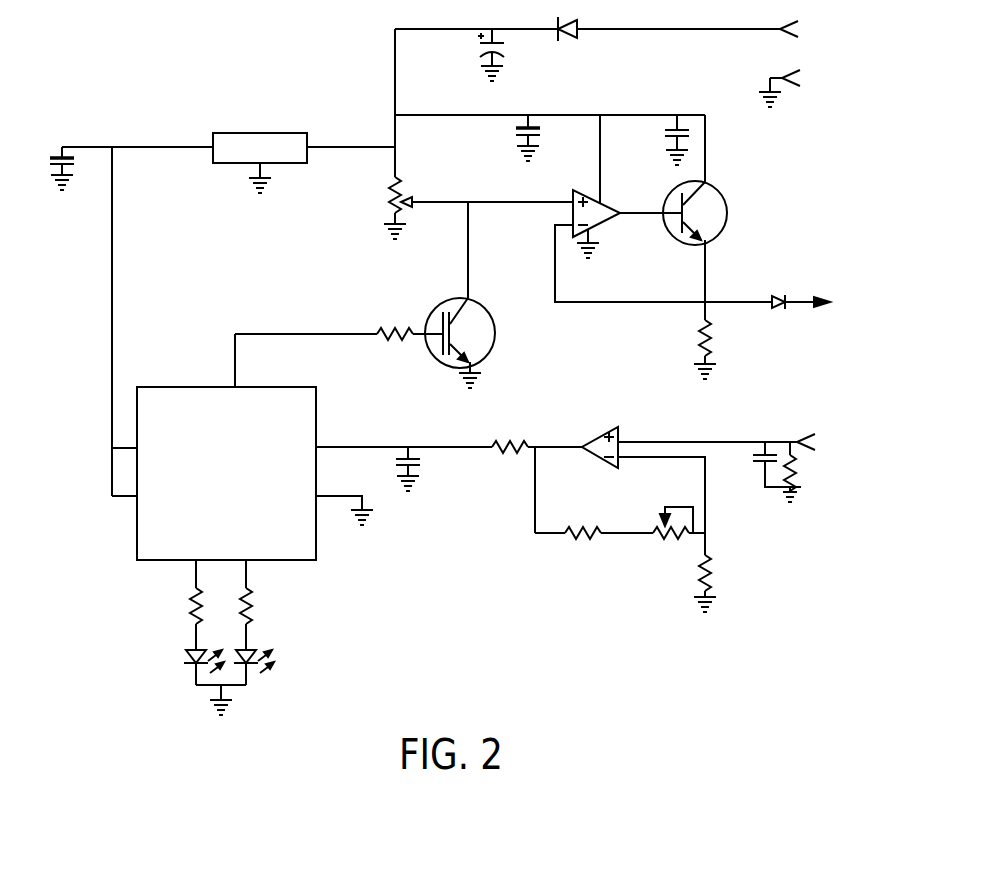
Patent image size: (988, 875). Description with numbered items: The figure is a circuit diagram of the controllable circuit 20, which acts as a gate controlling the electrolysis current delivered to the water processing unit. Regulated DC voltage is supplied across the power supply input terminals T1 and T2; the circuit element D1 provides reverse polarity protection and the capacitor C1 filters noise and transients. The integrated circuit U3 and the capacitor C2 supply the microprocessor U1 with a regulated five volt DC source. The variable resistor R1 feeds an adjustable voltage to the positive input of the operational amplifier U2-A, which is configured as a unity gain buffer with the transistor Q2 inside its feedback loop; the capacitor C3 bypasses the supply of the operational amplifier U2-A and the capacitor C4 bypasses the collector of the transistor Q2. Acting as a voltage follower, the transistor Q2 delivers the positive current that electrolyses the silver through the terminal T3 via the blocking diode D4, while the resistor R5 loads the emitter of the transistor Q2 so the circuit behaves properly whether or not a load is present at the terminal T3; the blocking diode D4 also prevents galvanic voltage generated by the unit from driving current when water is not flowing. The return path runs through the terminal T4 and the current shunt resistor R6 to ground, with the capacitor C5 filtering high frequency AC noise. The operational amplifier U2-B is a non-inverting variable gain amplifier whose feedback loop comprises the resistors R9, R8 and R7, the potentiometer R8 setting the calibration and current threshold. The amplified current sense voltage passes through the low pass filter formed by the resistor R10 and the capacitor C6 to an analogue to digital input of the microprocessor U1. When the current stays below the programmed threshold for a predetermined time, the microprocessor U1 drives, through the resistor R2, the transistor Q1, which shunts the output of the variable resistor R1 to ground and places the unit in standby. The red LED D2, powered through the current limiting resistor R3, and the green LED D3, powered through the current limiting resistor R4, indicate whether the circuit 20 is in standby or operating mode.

The circuit 20 is at (95, 340).
The capacitor C1 is at (479, 55).
The capacitor C2 is at (76, 168).
The capacitor C3 is at (541, 138).
The capacitor C4 is at (664, 140).
The capacitor C5 is at (752, 458).
The capacitor C6 is at (423, 469).
The circuit element D1 is at (580, 36).
The red LED D2 is at (195, 650).
The green LED D3 is at (245, 650).
The blocking diode D4 is at (765, 289).
The power supply input terminal T1 is at (803, 30).
The power supply input terminal T2 is at (804, 80).
The terminal T3 is at (835, 302).
The terminal T4 is at (820, 443).
The microprocessor U1 is at (226, 473).
The operational amplifier U2-A is at (607, 214).
The operational amplifier U2-B is at (588, 434).
The integrated circuit U3 is at (260, 148).
The transistor Q1 is at (467, 336).
The transistor Q2 is at (704, 207).
The variable resistor R1 is at (426, 204).
The resistor R2 is at (389, 320).
The current limiting resistor R3 is at (184, 602).
The current limiting resistor R4 is at (234, 602).
The resistor R5 is at (697, 349).
The current shunt resistor R6 is at (800, 478).
The resistor R7 is at (715, 583).
The potentiometer R8 is at (673, 539).
The resistor R9 is at (578, 521).
The resistor R10 is at (505, 435).